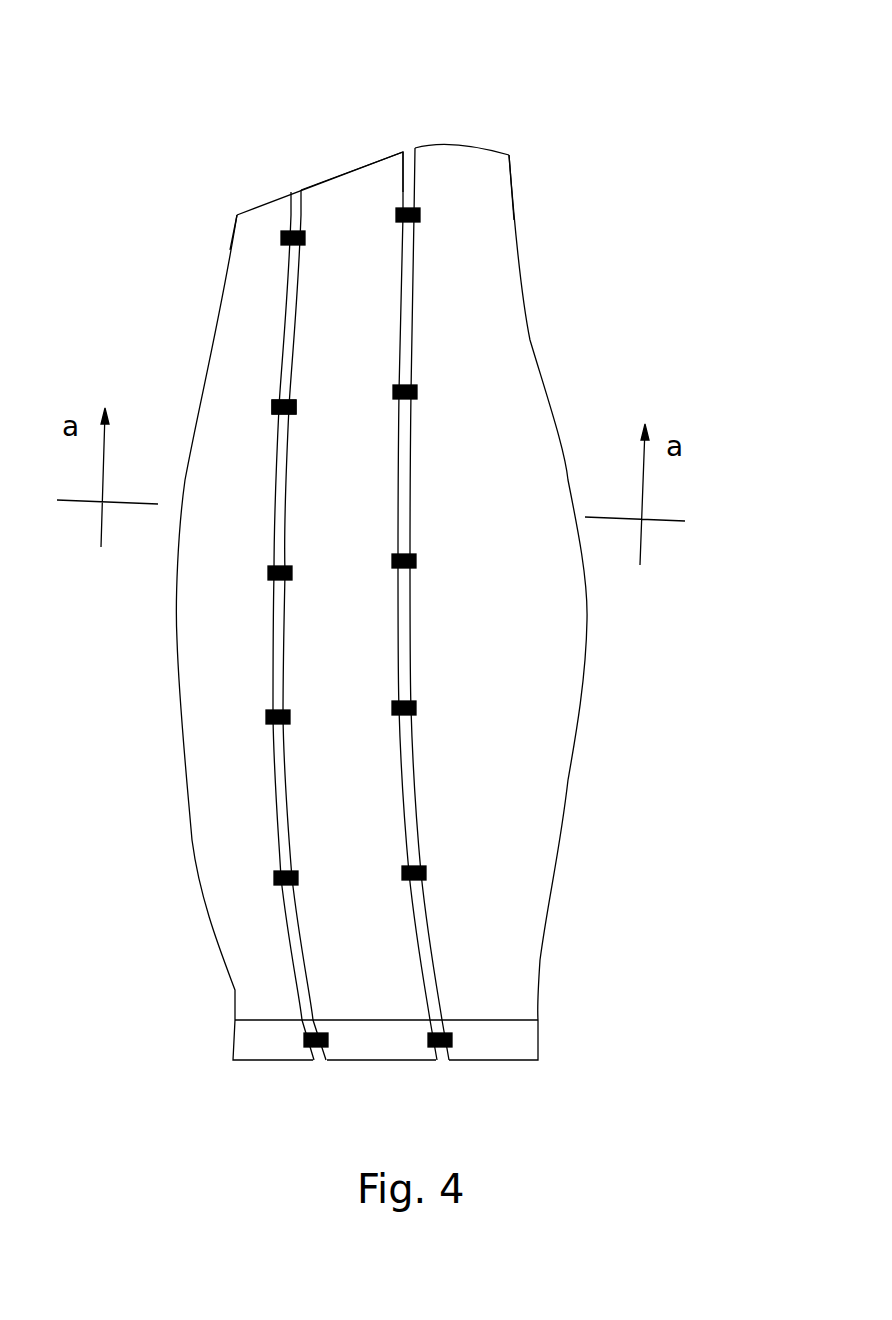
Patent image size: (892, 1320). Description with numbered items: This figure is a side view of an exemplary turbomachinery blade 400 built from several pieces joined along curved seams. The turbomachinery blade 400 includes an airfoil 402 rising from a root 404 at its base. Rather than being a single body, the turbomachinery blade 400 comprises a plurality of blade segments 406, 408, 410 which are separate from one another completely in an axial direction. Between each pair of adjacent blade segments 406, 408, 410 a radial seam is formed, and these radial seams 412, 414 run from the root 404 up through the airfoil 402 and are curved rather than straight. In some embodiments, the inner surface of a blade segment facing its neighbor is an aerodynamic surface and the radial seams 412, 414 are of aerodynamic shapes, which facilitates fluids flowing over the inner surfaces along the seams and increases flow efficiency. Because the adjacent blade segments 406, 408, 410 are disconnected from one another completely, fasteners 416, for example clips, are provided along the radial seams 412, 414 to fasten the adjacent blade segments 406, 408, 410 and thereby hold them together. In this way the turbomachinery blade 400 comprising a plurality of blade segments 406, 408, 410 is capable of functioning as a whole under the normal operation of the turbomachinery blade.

The turbomachinery blade 400 is at (578, 70).
The airfoil 402 is at (204, 800).
The root 404 is at (510, 1062).
The blade segment 406 is at (242, 223).
The blade segment 408 is at (350, 190).
The blade segment 410 is at (481, 218).
The radial seam 412 is at (295, 200).
The radial seam 414 is at (410, 175).
The fastener 416 is at (273, 408).